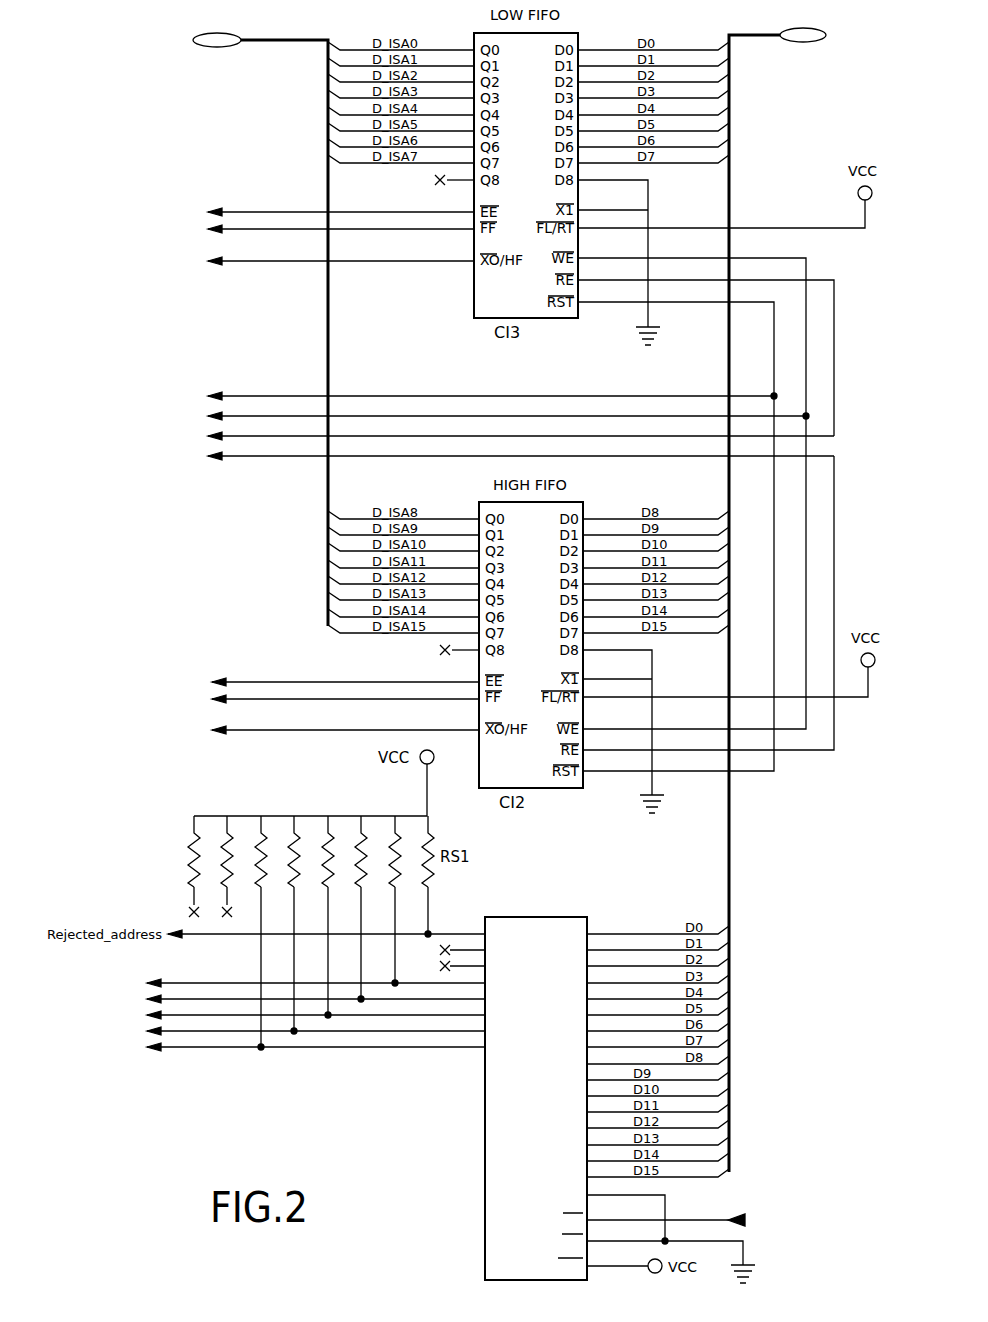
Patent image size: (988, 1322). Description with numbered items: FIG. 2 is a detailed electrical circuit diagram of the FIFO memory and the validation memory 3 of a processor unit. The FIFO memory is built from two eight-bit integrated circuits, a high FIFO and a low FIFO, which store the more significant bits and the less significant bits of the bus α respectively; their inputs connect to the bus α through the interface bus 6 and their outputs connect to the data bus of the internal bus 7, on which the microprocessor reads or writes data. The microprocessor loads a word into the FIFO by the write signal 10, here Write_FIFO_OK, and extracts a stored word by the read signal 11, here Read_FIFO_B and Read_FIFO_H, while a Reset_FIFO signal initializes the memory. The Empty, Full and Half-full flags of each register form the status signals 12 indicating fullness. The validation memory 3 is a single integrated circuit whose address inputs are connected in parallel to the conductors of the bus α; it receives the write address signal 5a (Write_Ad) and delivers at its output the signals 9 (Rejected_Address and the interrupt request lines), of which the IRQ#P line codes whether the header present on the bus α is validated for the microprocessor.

The validation memory 3 is at (472, 1118).
The write address signal 5a is at (712, 1218).
The interface bus 6 is at (817, 599).
The internal bus 7 is at (200, 328).
The output signals of the validation memory 9 is at (171, 985).
The write signal 10 is at (269, 414).
The read signal 11 is at (271, 440).
The status signals 12 is at (249, 261).